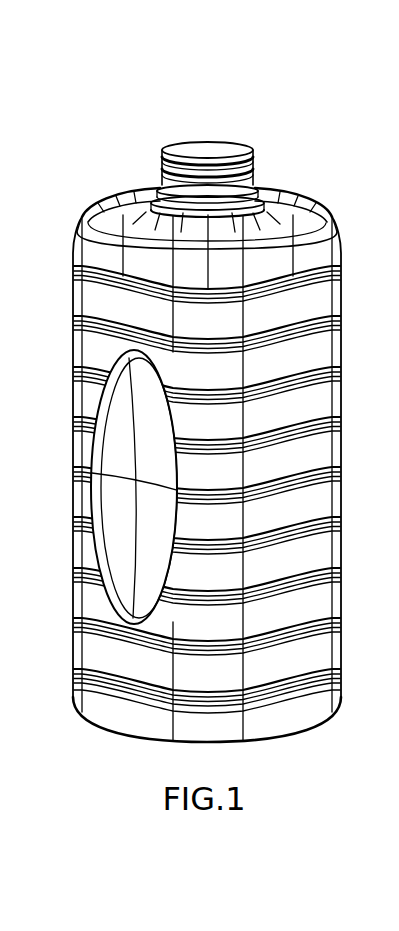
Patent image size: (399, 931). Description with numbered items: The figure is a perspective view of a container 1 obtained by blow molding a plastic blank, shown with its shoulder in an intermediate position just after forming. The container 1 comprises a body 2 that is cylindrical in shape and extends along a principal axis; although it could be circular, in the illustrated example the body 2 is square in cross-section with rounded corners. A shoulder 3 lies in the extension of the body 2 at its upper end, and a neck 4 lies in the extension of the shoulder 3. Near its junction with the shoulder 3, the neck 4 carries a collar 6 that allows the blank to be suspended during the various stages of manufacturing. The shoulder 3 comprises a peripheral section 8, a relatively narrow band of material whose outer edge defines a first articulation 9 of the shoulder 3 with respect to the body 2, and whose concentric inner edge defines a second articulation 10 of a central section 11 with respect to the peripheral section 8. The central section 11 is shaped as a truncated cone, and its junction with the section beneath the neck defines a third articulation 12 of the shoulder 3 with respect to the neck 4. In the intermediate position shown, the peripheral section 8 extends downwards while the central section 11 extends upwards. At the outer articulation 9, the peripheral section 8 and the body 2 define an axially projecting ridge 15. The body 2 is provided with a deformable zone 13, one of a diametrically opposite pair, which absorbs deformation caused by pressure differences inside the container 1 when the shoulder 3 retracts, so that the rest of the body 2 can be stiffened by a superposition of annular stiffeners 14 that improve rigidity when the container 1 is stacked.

The container 1 is at (210, 419).
The body 2 is at (352, 389).
The shoulder 3 is at (120, 193).
The neck 4 is at (253, 157).
The collar 6 is at (157, 183).
The peripheral section 8 is at (303, 206).
The first articulation 9 is at (88, 208).
The second articulation 10 is at (283, 198).
The central section 11 is at (318, 226).
The third articulation 12 is at (140, 228).
The deformable zone 13 is at (110, 508).
The annular stiffeners 14 is at (313, 552).
The axially projecting ridge 15 is at (74, 215).